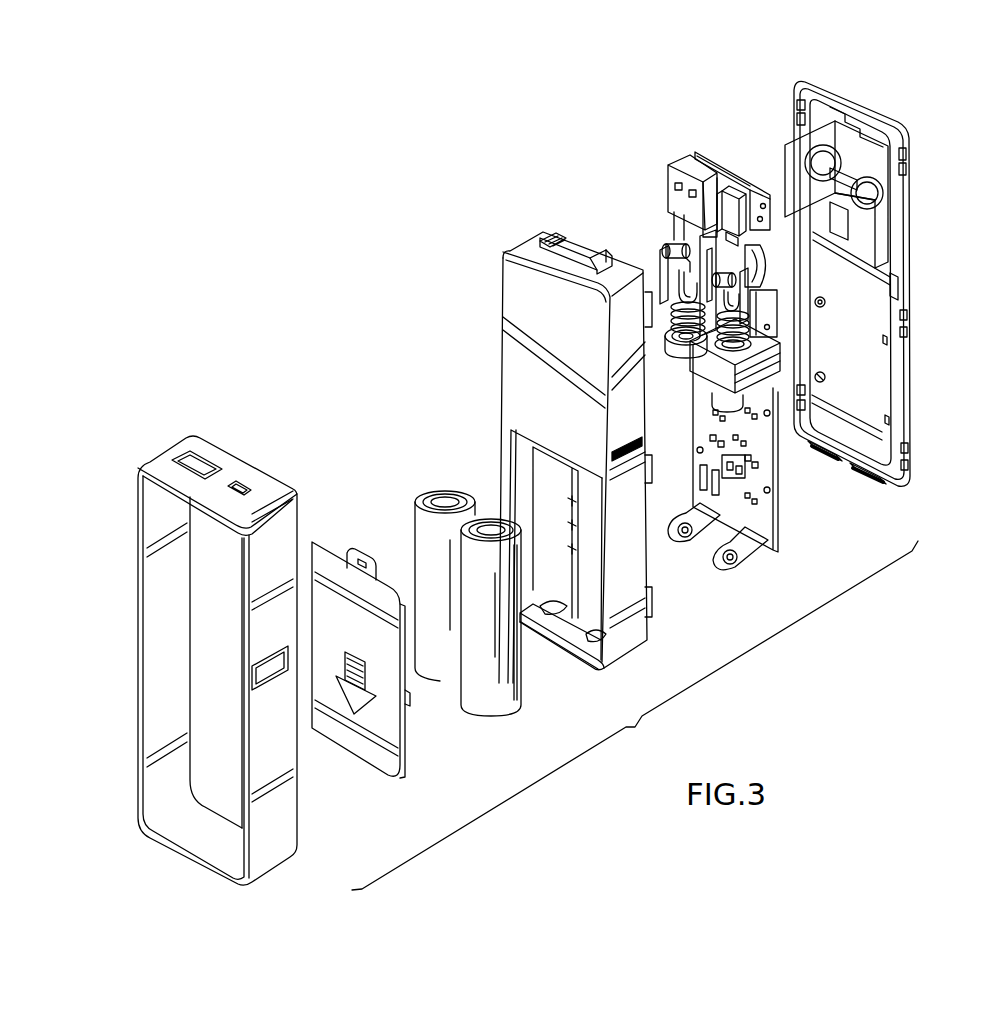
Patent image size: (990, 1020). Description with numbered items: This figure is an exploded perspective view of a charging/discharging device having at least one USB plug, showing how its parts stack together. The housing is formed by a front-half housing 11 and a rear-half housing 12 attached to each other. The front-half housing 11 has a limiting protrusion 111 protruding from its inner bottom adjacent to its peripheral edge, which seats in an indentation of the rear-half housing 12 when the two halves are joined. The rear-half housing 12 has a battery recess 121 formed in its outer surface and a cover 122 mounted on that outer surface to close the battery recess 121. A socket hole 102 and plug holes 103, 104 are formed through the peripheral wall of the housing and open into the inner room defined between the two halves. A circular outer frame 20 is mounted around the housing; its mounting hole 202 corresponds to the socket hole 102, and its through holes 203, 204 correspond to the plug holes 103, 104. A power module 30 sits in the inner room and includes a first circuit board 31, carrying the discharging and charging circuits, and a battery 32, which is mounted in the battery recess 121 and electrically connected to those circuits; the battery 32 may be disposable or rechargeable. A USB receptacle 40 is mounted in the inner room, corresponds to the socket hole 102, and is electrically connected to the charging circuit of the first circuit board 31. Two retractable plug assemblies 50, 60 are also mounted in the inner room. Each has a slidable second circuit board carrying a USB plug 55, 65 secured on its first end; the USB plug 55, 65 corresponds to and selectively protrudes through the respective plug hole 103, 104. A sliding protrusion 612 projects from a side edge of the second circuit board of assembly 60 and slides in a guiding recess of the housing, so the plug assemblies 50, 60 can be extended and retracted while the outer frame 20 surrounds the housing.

The front-half housing 11 is at (908, 272).
The limiting protrusion 111 is at (887, 216).
The rear-half housing 12 is at (627, 636).
The battery recess 121 is at (583, 628).
The cover 122 is at (388, 757).
The socket hole 102 is at (615, 462).
The plug hole 103 is at (577, 260).
The plug hole 104 is at (598, 276).
The outer frame 20 is at (268, 851).
The mounting hole 202 is at (278, 662).
The through hole 203 is at (188, 452).
The through hole 204 is at (242, 482).
The power module 30 is at (739, 340).
The first circuit board 31 is at (764, 517).
The battery 32 is at (513, 700).
The USB receptacle 40 is at (777, 348).
The retractable plug assembly 50 is at (660, 230).
The USB plug 55 is at (668, 170).
The retractable plug assembly 60 is at (736, 163).
The sliding protrusion 612 is at (750, 303).
The USB plug 65 is at (730, 194).